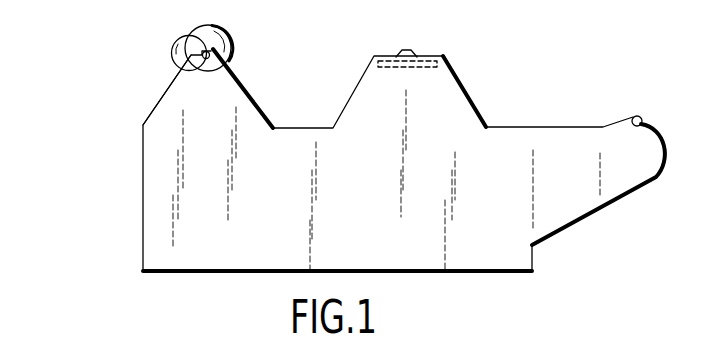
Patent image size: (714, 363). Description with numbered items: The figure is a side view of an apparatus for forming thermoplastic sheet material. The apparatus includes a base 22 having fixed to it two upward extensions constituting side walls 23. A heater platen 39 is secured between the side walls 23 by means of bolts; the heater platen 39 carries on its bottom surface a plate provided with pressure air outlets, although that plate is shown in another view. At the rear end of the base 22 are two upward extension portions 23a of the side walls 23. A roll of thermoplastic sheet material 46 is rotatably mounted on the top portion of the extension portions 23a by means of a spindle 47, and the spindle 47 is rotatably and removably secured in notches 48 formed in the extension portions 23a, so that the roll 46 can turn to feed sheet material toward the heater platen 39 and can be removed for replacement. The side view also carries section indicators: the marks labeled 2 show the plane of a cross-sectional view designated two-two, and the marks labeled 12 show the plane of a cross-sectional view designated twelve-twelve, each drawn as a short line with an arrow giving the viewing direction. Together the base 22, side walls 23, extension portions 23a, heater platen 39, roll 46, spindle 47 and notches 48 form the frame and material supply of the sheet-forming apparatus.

The base 22 is at (112, 225).
The side walls 23 is at (572, 209).
The upward extension portions 23a is at (190, 98).
The heater platen 39 is at (420, 57).
The roll of thermoplastic sheet material 46 is at (233, 50).
The spindle 47 is at (200, 71).
The notches 48 is at (200, 41).
The section line 12- 12 is at (352, 68).
The section line 2- 2 is at (120, 148).